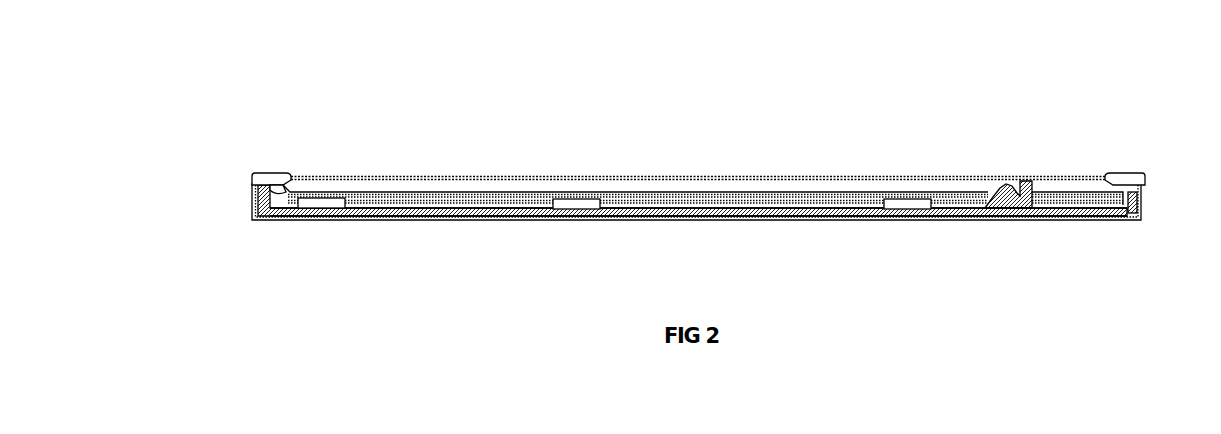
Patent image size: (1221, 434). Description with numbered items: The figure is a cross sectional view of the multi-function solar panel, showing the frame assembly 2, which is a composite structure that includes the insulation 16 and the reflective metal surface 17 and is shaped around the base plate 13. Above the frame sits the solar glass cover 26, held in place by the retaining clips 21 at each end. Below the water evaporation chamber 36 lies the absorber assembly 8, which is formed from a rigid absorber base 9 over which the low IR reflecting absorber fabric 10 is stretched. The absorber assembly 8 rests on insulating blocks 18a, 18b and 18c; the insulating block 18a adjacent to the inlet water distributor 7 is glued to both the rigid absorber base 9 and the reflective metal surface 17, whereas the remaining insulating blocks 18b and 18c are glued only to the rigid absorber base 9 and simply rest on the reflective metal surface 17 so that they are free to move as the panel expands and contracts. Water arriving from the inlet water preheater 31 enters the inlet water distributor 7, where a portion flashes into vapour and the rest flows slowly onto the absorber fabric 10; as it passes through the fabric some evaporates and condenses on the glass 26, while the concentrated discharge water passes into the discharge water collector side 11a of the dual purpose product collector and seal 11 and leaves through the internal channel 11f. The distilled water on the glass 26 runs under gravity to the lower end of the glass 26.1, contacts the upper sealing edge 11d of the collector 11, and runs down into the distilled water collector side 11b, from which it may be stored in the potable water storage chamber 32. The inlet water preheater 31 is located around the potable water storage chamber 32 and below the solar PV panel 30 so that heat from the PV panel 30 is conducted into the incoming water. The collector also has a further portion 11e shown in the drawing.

The frame assembly 2 is at (247, 212).
The inlet water distributor 7 is at (279, 188).
The absorber assembly 8 is at (530, 193).
The rigid absorber base 9 is at (765, 210).
The absorber fabric 10 is at (407, 191).
The dual purpose product collector and seal 11 is at (1003, 208).
The discharge water collector side 11a is at (992, 191).
The distilled water collector side 11b is at (1011, 182).
The upper sealing edge 11d is at (1025, 177).
The clip foot 11e is at (1018, 207).
The internal channel 11f is at (1031, 200).
The base plate 13 is at (340, 219).
The insulation 16 is at (435, 215).
The reflective metal surface 17 is at (505, 210).
The insulating block 18a is at (303, 211).
The insulating block 18b is at (570, 212).
The insulating block 18c is at (910, 210).
The retaining clip 21 is at (251, 175).
The solar glass cover 26 is at (350, 176).
The lower end of the glass 26.1 is at (862, 176).
The solar PV panel 30 is at (1086, 179).
The inlet water preheater 31 is at (1100, 210).
The potable water storage chamber 32 is at (1141, 191).
The water evaporation chamber 36 is at (720, 189).